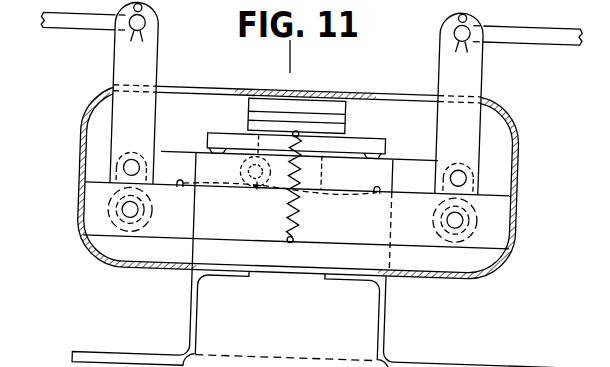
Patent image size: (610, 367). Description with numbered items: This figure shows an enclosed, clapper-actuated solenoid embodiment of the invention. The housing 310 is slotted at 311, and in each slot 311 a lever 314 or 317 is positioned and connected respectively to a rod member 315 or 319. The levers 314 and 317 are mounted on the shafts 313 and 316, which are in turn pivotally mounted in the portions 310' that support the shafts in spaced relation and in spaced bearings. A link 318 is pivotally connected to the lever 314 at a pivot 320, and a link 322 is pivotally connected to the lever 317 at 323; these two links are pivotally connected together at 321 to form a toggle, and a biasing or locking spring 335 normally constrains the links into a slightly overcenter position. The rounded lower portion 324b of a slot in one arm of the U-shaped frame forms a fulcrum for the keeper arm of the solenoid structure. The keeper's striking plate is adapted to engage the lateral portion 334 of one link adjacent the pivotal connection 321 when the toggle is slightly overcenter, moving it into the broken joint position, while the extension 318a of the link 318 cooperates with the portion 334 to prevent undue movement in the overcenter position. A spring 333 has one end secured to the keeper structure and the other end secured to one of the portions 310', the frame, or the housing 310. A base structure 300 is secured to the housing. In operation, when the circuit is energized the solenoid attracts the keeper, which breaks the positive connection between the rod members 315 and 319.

The base structure 300 is at (195, 327).
The housing 310 is at (305, 199).
The shaft supporting portions 310' is at (294, 281).
The slot 311 is at (90, 119).
The shaft 313 is at (131, 216).
The lever 314 is at (118, 74).
The rod member 315 is at (61, 32).
The shaft 316 is at (458, 215).
The lever 317 is at (468, 77).
The link 318 is at (174, 156).
The extension 318a is at (314, 161).
The rod member 319 is at (538, 35).
The left pivot pin 320 is at (132, 172).
The pivotal connection 321 is at (258, 191).
The link 322 is at (412, 166).
The pivotal connection 323 is at (460, 173).
The rounded slot portion 324b is at (217, 140).
The spring 333 is at (304, 220).
The lateral portion 334 is at (276, 149).
The biasing or locking spring 335 is at (217, 196).